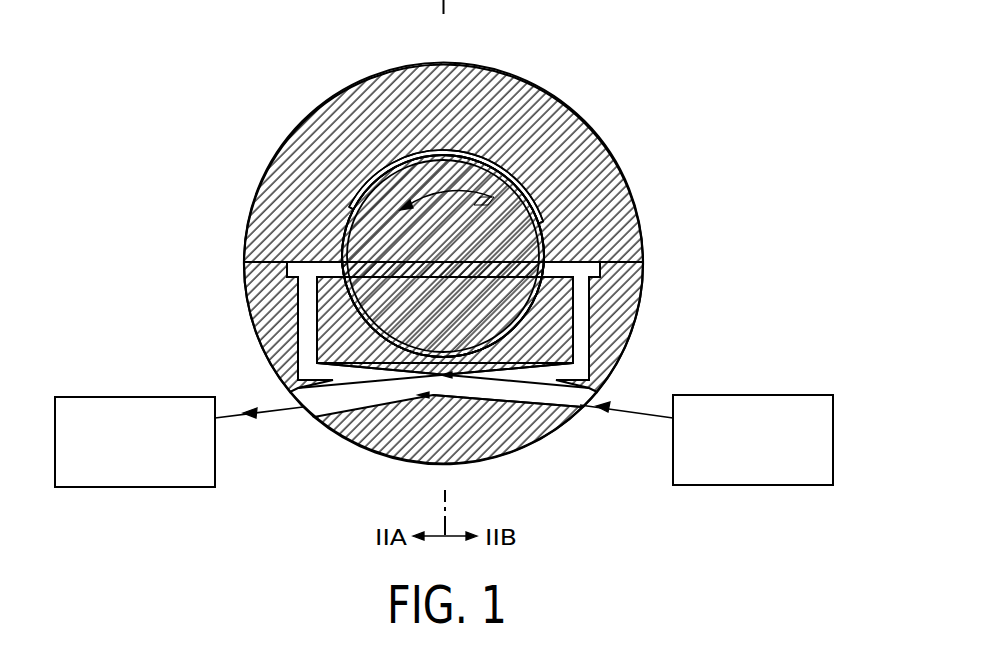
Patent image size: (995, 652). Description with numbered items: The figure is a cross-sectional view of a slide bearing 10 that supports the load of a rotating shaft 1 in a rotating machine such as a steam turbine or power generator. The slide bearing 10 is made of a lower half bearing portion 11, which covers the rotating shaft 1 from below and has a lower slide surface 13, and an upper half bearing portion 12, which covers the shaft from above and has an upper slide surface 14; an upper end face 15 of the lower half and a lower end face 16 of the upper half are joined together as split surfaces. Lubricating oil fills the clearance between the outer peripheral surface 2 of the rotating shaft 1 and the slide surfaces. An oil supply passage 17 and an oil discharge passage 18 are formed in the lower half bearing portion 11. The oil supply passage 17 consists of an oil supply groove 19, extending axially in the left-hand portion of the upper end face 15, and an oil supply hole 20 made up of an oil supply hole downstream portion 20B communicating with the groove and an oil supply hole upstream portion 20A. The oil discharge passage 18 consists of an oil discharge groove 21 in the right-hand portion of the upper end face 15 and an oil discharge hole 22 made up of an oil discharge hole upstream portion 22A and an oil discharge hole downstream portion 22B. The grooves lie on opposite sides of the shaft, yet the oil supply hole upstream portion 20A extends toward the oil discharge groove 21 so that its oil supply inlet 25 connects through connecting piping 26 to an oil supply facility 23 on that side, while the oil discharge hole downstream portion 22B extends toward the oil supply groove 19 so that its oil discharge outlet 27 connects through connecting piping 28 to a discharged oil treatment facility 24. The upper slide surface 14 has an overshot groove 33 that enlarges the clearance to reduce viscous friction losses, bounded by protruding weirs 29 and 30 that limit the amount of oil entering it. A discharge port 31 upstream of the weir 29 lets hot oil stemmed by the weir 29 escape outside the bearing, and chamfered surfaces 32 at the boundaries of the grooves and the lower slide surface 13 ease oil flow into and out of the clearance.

The rotating shaft 1 is at (548, 168).
The outer peripheral surface 2 is at (428, 360).
The slide bearing 10 is at (658, 86).
The lower half bearing portion 11 is at (510, 445).
The upper half bearing portion 12 is at (525, 105).
The lower slide surface 13 is at (374, 370).
The upper slide surface 14 is at (468, 152).
The upper end face 15 is at (626, 250).
The lower end face 16 is at (263, 260).
The oil supply passage 17 is at (148, 257).
The oil discharge passage 18 is at (763, 255).
The oil supply groove 19 is at (247, 268).
The oil supply hole 20 is at (297, 342).
The oil supply hole upstream portion 20A is at (530, 403).
The oil supply hole downstream portion 20B is at (297, 305).
The oil discharge groove 21 is at (590, 270).
The oil discharge hole 22 is at (578, 352).
The oil discharge hole upstream portion 22A is at (582, 305).
The oil discharge hole downstream portion 22B is at (346, 399).
The oil supply facility 23 is at (782, 396).
The discharged oil treatment facility 24 is at (163, 396).
The oil supply inlet 25 is at (582, 408).
The connecting piping 26 is at (632, 410).
The oil discharge outlet 27 is at (303, 418).
The connecting piping 28 is at (288, 403).
The weir 29 is at (352, 247).
The weir 30 is at (535, 247).
The discharge port 31 is at (340, 237).
The chamfered surfaces 32 is at (366, 281).
The overshot groove 33 is at (402, 157).